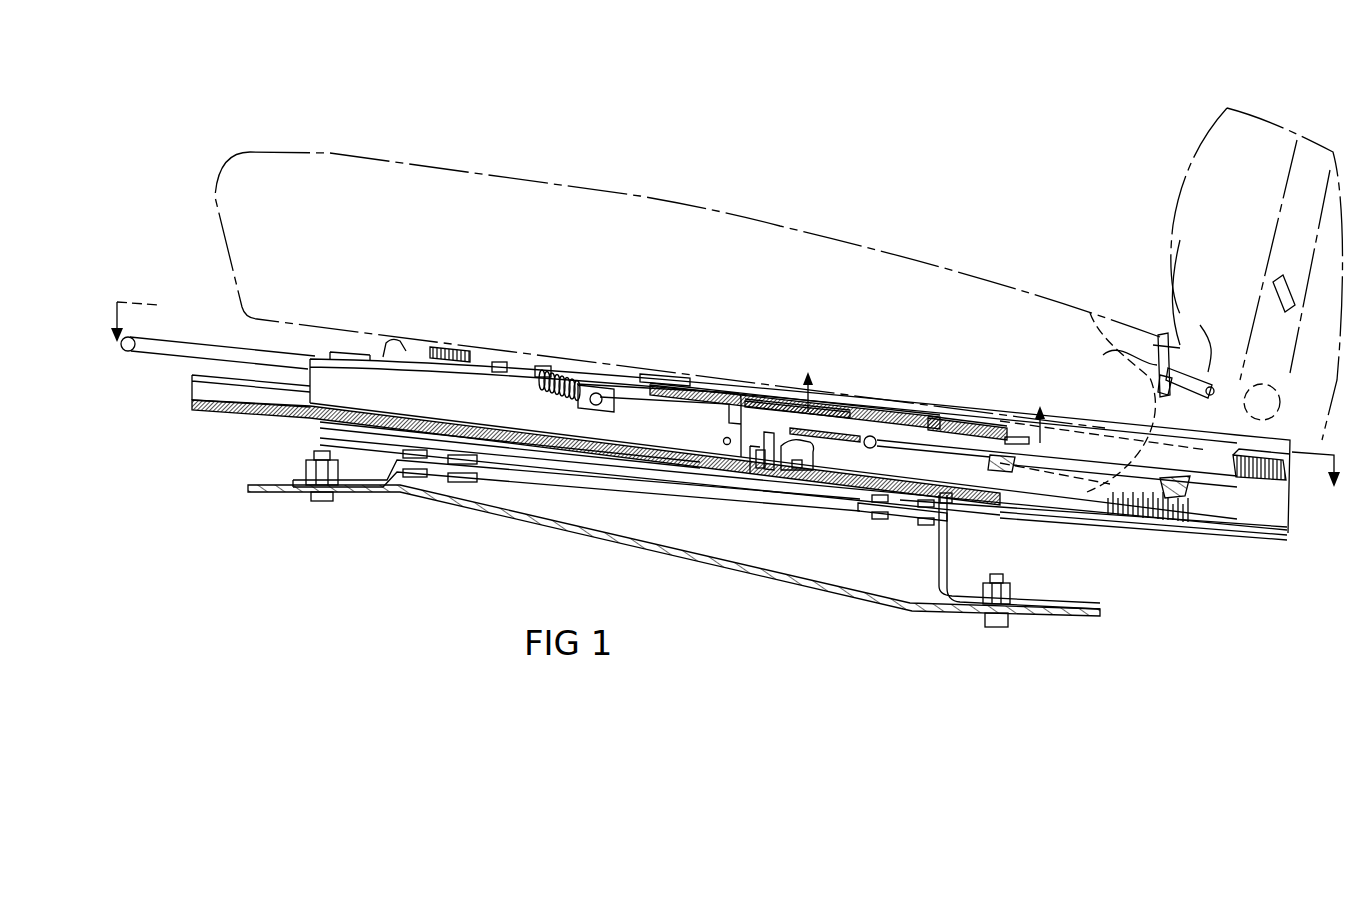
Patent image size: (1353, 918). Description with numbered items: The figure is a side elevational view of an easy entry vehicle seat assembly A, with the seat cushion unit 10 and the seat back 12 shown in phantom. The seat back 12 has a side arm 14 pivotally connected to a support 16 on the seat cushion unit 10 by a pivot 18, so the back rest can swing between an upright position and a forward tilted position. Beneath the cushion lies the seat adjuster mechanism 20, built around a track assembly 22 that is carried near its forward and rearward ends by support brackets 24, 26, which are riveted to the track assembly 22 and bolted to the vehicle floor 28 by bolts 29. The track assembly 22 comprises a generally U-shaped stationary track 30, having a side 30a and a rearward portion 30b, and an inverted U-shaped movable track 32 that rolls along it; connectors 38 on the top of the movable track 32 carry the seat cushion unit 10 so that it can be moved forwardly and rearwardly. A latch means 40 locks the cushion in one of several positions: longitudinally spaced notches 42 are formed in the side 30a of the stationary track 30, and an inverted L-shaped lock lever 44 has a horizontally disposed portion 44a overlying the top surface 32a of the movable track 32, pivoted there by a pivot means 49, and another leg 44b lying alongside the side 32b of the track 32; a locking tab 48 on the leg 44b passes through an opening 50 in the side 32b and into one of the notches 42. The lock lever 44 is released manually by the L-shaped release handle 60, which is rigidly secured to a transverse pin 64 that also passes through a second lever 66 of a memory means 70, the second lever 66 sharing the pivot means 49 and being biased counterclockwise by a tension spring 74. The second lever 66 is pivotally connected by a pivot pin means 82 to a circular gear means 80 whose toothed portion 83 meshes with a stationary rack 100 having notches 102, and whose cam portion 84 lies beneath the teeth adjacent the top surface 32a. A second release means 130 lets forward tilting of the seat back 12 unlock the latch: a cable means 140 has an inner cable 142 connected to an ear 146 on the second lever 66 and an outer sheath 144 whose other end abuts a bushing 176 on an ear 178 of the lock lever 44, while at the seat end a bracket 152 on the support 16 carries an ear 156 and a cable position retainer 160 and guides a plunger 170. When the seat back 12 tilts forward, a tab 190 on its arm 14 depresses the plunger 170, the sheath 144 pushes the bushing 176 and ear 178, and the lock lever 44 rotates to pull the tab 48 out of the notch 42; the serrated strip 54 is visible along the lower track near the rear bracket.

The seat cushion unit 10 is at (428, 152).
The seat assembly A is at (687, 243).
The seat back 12 is at (1189, 150).
The side arms 14 is at (1280, 185).
The supports 16 is at (1097, 343).
The pivots 18 is at (1288, 400).
The seat adjuster mechanism 20 is at (305, 433).
The track assembly 22 is at (1122, 524).
The support bracket 24 is at (375, 482).
The support bracket 26 is at (942, 575).
The vehicle floor 28 is at (776, 580).
The bolts 29 is at (320, 490).
The stationary track 30 is at (707, 465).
The side of stationary track 30a is at (205, 398).
The lower rail rear portion 30b is at (1062, 494).
The movable track 32 is at (741, 411).
The top surface of movable track 32a is at (326, 352).
The side of movable track 32b is at (527, 430).
The connectors 38 is at (392, 342).
The latch means 40 is at (852, 410).
The notches 42 is at (840, 475).
The lock lever 44 is at (755, 403).
The horizontally disposed portion 44a is at (790, 380).
The other leg 44b is at (856, 436).
The locking tab 48 is at (895, 513).
The pivot means 49 is at (736, 390).
The notch or opening 50 is at (948, 501).
The serrated strip 54 is at (1188, 520).
The release handle 60 is at (160, 360).
The pin 64 is at (634, 368).
The second lever 66 is at (661, 370).
The memory means 70 is at (930, 385).
The tension spring 74 is at (572, 374).
The gear means 80 is at (977, 405).
The pivot pin means 82 is at (915, 405).
The toothed portion 83 is at (1010, 436).
The cam portion 84 is at (951, 430).
The stationary rack 100 is at (476, 340).
The notches 102 is at (541, 366).
The second release means 130 is at (1141, 326).
The cable means 140 is at (775, 477).
The inner cable 142 is at (752, 470).
The outer sheath 144 is at (792, 480).
The tab or ear 146 is at (723, 440).
The bracket 152 is at (1210, 350).
The ear 156 is at (1150, 365).
The cable position retainer 160 is at (1185, 390).
The plunger 170 is at (1163, 340).
The bushing 176 is at (796, 458).
The ear 178 is at (765, 462).
The tab 190 is at (1266, 283).